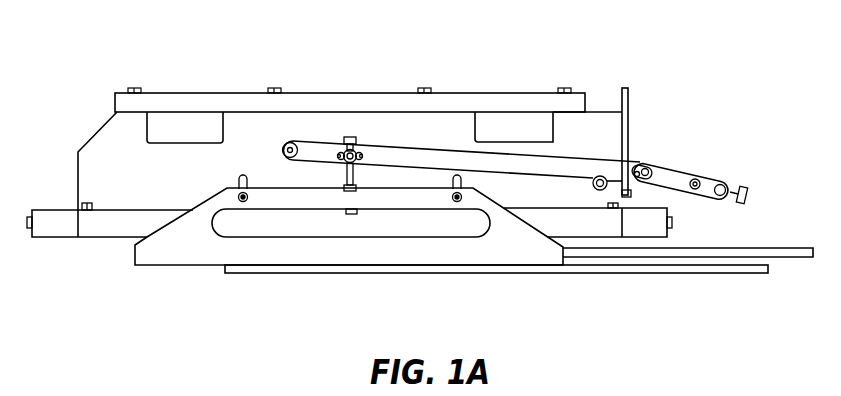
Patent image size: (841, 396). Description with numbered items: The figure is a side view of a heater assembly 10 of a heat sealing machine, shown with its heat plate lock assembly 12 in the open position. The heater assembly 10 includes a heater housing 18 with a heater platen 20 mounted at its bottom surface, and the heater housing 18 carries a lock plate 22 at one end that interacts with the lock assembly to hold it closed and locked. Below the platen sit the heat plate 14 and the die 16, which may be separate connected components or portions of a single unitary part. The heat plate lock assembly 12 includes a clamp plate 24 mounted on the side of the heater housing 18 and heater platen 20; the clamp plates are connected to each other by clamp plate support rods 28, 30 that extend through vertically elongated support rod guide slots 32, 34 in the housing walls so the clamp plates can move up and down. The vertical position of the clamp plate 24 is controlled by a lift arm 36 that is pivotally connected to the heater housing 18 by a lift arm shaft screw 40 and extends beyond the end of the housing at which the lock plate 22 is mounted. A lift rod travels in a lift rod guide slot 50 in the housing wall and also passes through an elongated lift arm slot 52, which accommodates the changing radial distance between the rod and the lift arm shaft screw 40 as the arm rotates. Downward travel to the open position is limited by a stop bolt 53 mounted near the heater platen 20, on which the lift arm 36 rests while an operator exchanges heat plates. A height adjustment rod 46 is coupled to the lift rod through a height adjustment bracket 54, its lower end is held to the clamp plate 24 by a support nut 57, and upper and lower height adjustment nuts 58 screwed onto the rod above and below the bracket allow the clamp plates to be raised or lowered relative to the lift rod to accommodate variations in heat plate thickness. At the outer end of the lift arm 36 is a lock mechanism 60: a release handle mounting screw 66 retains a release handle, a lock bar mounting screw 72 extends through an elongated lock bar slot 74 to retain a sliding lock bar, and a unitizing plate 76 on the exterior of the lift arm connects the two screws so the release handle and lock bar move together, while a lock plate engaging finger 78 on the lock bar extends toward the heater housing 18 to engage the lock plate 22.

The heater assembly 10 is at (210, 74).
The heat plate lock assembly 12 is at (552, 285).
The heat plate 14 is at (796, 254).
The die 16 is at (693, 264).
The heater housing 18 is at (103, 137).
The heater platen 20 is at (96, 230).
The lock plate 22 is at (626, 103).
The clamp plate 24 is at (147, 258).
The clamp plate support rod 28 is at (458, 203).
The clamp plate support rod 30 is at (242, 202).
The support rod guide slot 32 is at (464, 181).
The support rod guide slot 34 is at (234, 182).
The lift arm 36 is at (543, 165).
The lift arm shaft screw 40 is at (290, 142).
The height adjustment rod 46 is at (357, 166).
The lift rod guide slot 50 is at (345, 151).
The lift arm slot 52 is at (364, 158).
The stop bolt 53 is at (600, 190).
The height adjustment bracket 54 is at (338, 163).
The support nut 57 is at (347, 186).
The height adjustment nut 58 is at (357, 137).
The lock mechanism 60 is at (750, 146).
The release handle mounting screw 66 is at (695, 178).
The lock bar mounting screw 72 is at (648, 171).
The lock bar slot 74 is at (640, 165).
The unitizing plate 76 is at (678, 184).
The lock plate engaging finger 78 is at (746, 192).